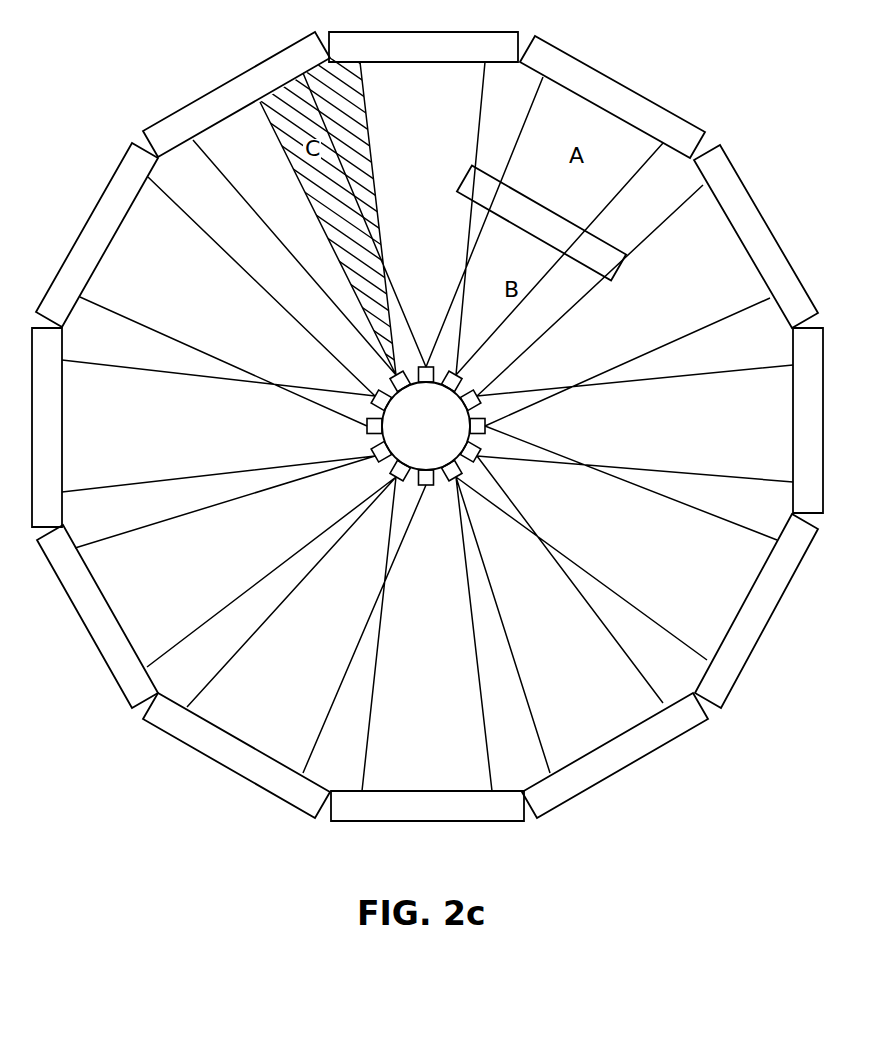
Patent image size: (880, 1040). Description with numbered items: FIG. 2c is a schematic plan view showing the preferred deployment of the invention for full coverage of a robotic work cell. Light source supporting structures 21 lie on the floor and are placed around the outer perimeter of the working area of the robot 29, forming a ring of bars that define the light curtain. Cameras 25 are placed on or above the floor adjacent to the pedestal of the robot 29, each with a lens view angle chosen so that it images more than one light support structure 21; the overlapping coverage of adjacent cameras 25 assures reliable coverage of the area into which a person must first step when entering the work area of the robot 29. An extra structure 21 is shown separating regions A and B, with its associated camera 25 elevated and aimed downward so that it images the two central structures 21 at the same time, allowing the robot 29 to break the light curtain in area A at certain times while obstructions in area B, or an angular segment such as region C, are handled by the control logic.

The light source supporting structure 21 is at (723, 153).
The camera 25 is at (368, 396).
The robot 29 is at (469, 421).